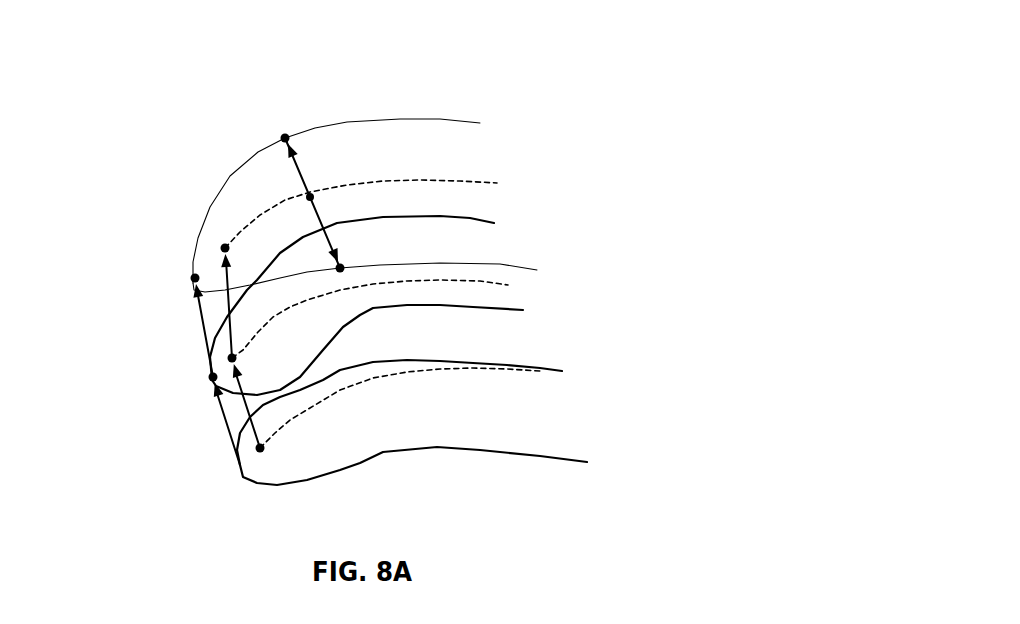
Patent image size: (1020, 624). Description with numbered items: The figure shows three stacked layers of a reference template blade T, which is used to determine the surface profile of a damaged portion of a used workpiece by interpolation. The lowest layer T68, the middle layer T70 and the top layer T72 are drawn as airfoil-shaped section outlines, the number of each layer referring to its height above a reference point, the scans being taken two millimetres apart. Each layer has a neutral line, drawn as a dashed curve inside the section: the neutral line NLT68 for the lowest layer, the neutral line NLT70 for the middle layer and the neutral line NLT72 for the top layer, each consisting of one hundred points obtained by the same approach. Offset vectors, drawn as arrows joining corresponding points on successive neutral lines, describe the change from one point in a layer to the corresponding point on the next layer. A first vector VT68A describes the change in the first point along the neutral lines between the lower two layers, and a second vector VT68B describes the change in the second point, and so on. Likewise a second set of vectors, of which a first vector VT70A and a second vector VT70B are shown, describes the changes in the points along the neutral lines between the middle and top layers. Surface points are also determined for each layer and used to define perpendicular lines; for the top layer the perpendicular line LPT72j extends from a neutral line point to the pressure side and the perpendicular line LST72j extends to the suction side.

The template blade T is at (274, 57).
The third layer of the template T72 is at (371, 190).
The neutral line of layer T72 NLT72 is at (412, 198).
The second layer of the template T70 is at (396, 295).
The neutral line of layer T70 NLT70 is at (423, 307).
The first layer of the template T68 is at (424, 400).
The neutral line of layer T68 NLT68 is at (452, 408).
The perpendicular line to pressure side of layer T72 LPT72j is at (264, 181).
The perpendicular line to suction side of layer T72 LST72j is at (377, 208).
The first offset vector between layers T70 and T72 VT70A is at (140, 316).
The second offset vector between layers T70 and T72 VT70B is at (183, 262).
The first offset vector between layers T68 and T70 VT68A is at (161, 413).
The second offset vector between layers T68 and T70 VT68B is at (325, 413).